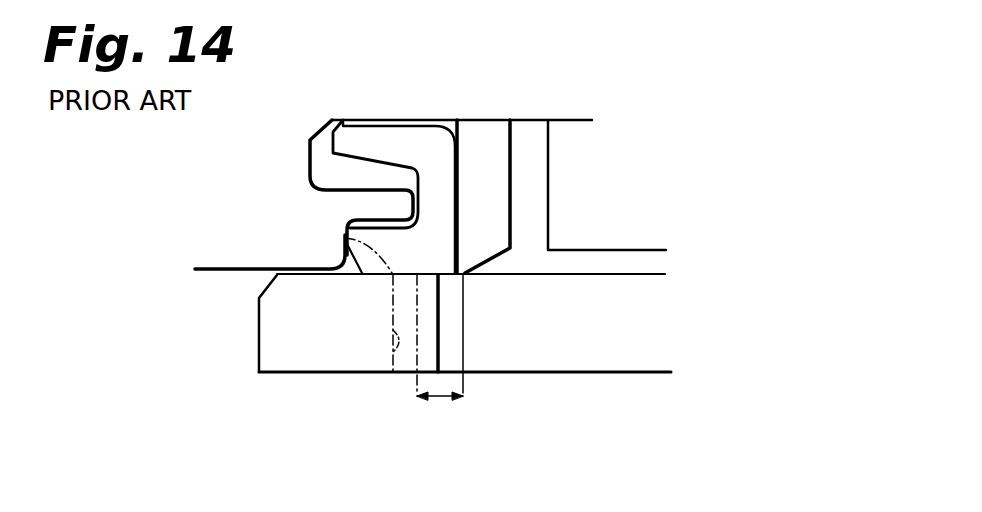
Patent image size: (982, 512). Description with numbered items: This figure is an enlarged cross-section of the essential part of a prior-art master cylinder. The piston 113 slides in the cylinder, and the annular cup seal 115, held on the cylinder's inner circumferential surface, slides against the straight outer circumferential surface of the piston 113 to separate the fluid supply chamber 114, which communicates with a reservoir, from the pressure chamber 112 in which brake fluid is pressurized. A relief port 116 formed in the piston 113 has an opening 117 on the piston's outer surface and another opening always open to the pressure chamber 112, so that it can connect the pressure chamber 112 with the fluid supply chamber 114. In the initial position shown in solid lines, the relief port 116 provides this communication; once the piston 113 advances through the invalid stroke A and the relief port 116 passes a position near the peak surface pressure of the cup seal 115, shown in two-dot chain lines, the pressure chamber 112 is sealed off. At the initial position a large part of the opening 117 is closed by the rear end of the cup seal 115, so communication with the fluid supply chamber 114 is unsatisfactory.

The pressure chamber 112 is at (330, 408).
The piston 113 is at (288, 299).
The fluid supply chamber 114 is at (587, 265).
The cup seal 115 is at (417, 143).
The relief port 116 is at (392, 340).
The opening 117 is at (464, 272).